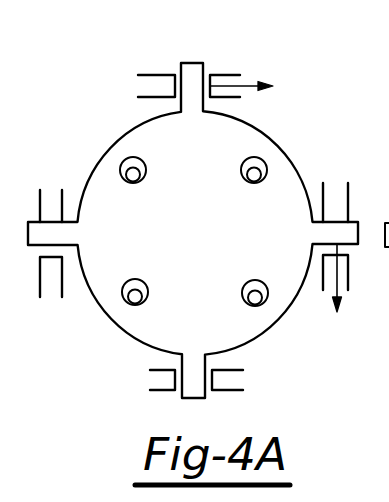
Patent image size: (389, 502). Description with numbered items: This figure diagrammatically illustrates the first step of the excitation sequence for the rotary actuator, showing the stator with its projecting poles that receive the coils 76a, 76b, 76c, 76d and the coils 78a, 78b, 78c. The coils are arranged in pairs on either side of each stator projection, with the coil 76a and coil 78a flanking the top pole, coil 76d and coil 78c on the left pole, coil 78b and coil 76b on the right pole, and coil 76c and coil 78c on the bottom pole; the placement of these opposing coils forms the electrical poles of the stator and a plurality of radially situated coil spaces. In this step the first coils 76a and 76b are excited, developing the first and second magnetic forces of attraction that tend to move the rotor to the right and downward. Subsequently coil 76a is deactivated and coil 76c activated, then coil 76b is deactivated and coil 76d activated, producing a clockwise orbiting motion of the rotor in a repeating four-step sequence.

The coil 76a is at (222, 75).
The coil 76b is at (342, 285).
The coil 76c is at (152, 377).
The coil 76d is at (62, 197).
The coil 78a is at (155, 77).
The coil 78b is at (335, 190).
The coil 78c is at (42, 298).